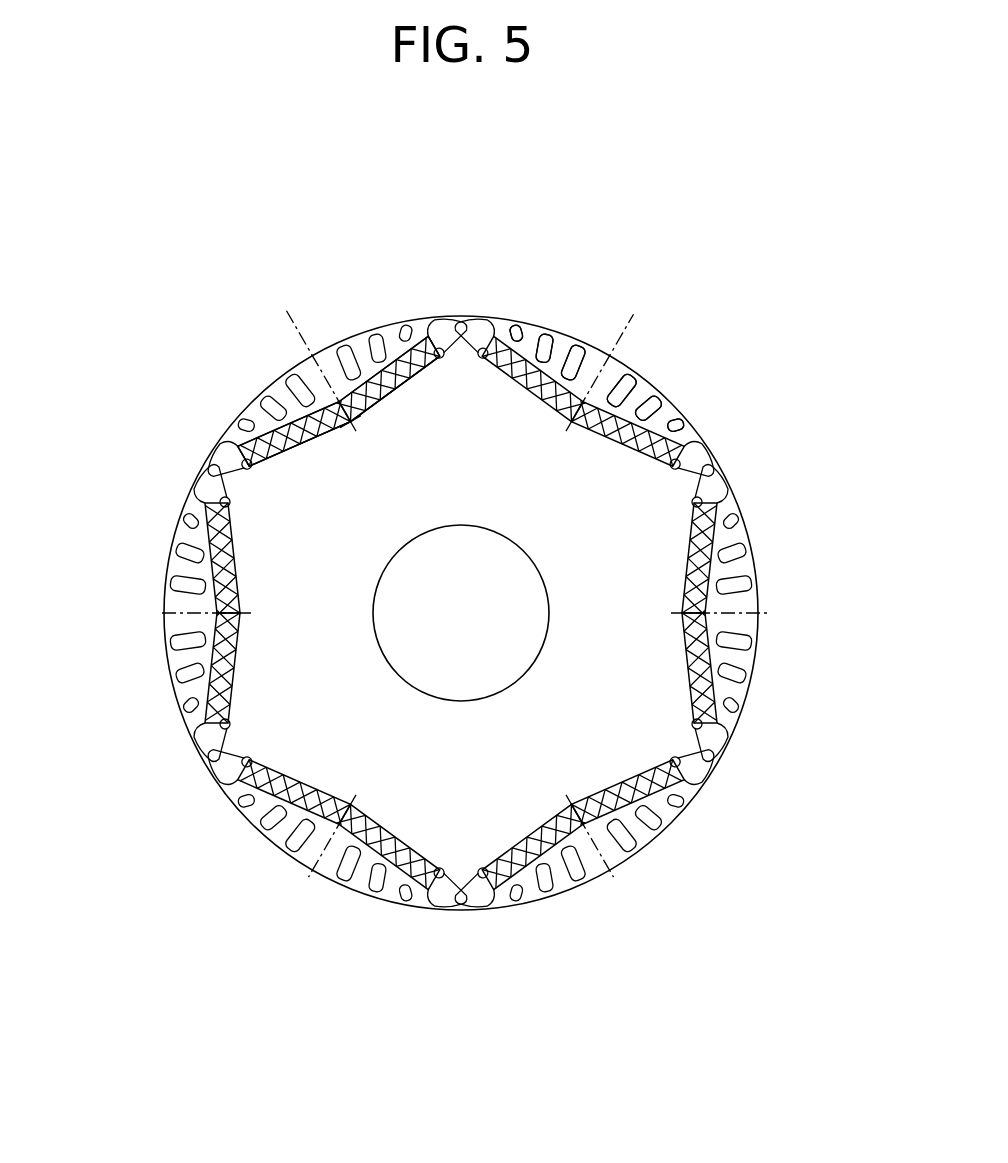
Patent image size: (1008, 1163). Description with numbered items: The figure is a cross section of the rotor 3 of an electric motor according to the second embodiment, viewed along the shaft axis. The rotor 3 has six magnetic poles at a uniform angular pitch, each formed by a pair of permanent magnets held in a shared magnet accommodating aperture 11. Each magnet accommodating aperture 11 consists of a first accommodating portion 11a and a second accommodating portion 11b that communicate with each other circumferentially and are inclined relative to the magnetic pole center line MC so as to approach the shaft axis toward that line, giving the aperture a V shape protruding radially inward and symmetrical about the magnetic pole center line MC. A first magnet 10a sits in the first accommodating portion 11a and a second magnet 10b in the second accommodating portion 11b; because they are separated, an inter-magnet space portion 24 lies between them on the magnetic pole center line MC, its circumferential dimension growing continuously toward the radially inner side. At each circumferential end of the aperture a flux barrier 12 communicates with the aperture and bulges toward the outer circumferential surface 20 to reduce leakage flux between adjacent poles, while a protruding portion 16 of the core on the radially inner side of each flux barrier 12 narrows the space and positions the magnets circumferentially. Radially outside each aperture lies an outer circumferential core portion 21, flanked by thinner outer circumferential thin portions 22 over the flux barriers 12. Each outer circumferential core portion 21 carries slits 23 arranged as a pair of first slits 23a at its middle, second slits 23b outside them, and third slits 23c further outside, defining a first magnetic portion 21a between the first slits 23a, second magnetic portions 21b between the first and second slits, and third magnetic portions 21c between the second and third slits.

The rotor 3 is at (162, 530).
The first magnet 10a is at (267, 437).
The second magnet 10b is at (407, 357).
The magnet accommodating aperture 11 is at (342, 401).
The first accommodating portion 11a is at (310, 448).
The second accommodating portion 11b is at (394, 394).
The flux barrier 12 is at (437, 343).
The protruding portion 16 is at (445, 350).
The outer circumferential surface 20 is at (487, 326).
The outer circumferential core portion 21 is at (364, 350).
The first magnetic portion 21a is at (752, 588).
The second magnetic portion 21b is at (750, 556).
The third magnetic portion 21c is at (745, 525).
The outer circumferential thin portion 22 is at (441, 330).
The slit 23 is at (546, 212).
The first slit 23a is at (578, 354).
The second slit 23b is at (551, 341).
The third slit 23c is at (524, 325).
The inter-magnet space portion 24 is at (339, 413).
The magnetic pole center line MC is at (650, 937).